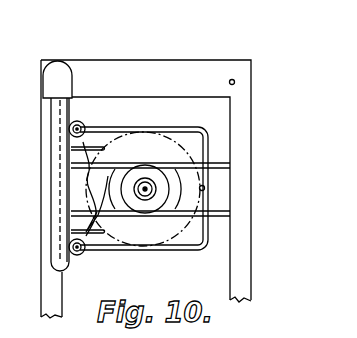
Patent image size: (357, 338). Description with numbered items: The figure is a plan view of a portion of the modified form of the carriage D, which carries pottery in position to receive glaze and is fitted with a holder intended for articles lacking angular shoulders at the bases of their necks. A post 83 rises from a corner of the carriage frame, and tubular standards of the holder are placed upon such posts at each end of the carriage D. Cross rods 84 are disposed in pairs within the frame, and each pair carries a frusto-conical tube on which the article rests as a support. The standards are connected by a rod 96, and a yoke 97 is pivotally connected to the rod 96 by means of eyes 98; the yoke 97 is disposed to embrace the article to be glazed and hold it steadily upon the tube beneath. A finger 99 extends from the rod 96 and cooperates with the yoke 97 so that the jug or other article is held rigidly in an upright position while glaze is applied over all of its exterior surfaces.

The carriage D is at (188, 68).
The post 83 is at (236, 80).
The cross rod 84 is at (161, 210).
The rod 96 is at (55, 122).
The yoke 97 is at (175, 130).
The eye 98 is at (82, 124).
The finger 99 is at (96, 189).